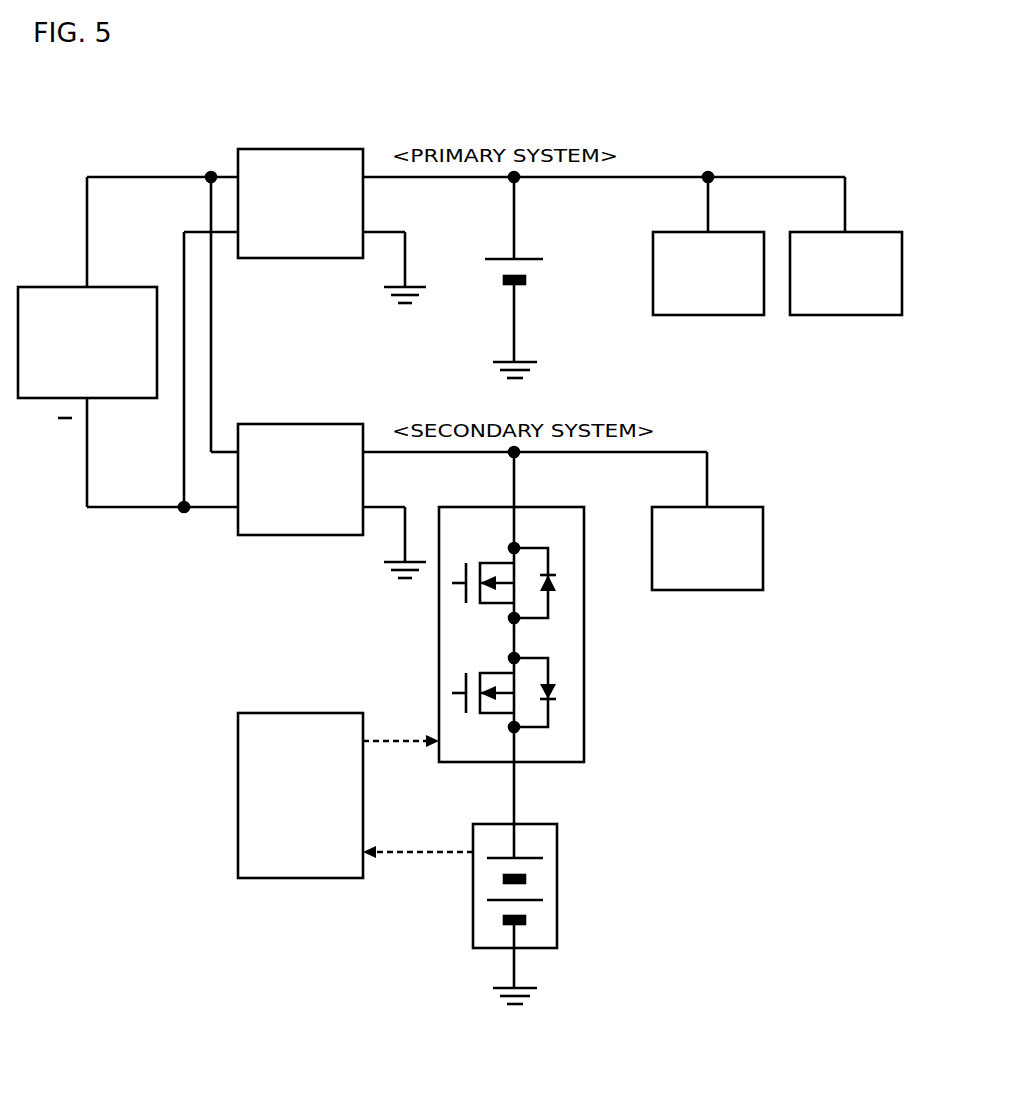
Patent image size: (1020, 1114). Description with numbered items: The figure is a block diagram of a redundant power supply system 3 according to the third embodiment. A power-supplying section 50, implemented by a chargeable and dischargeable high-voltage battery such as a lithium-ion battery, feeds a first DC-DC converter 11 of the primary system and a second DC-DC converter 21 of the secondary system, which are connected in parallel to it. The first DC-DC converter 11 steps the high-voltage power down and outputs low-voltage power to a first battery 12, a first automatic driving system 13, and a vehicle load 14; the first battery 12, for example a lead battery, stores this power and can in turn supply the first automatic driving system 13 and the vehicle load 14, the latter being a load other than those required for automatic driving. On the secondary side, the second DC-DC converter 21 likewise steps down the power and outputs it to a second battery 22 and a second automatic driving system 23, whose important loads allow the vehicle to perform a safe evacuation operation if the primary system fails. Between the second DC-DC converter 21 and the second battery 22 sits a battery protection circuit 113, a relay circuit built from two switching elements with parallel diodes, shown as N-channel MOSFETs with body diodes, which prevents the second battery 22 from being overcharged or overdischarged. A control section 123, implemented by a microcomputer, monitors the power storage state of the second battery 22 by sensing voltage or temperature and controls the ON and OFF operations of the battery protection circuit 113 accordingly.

The redundant power supply system 3 is at (798, 99).
The first DC-DC converter 11 is at (320, 148).
The first battery 12 is at (527, 253).
The first automatic driving system 13 is at (735, 231).
The vehicle load 14 is at (873, 231).
The second DC-DC converter 21 is at (320, 423).
The second battery 22 is at (557, 882).
The second automatic driving system 23 is at (735, 506).
The power-supplying section 50 is at (115, 285).
The battery protection circuit 113 is at (584, 547).
The control section 123 is at (238, 752).